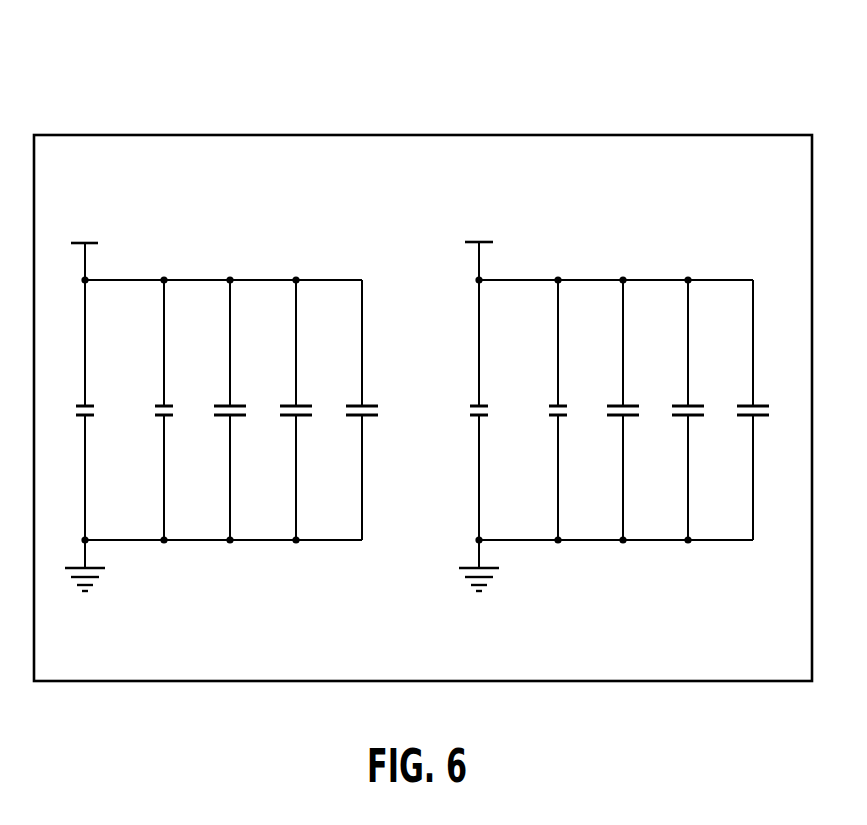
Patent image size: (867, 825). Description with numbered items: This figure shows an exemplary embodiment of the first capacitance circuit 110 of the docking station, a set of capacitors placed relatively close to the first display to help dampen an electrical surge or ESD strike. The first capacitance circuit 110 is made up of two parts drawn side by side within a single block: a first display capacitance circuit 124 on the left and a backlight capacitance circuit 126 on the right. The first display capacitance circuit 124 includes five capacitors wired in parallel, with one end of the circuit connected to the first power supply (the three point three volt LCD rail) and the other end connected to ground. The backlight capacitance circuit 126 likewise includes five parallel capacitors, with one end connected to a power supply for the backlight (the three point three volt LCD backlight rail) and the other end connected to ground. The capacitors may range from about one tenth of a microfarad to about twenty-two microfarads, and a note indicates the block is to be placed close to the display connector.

The first capacitance circuit 110 is at (707, 102).
The first display capacitance circuit 124 is at (232, 238).
The backlight capacitance circuit 126 is at (610, 248).